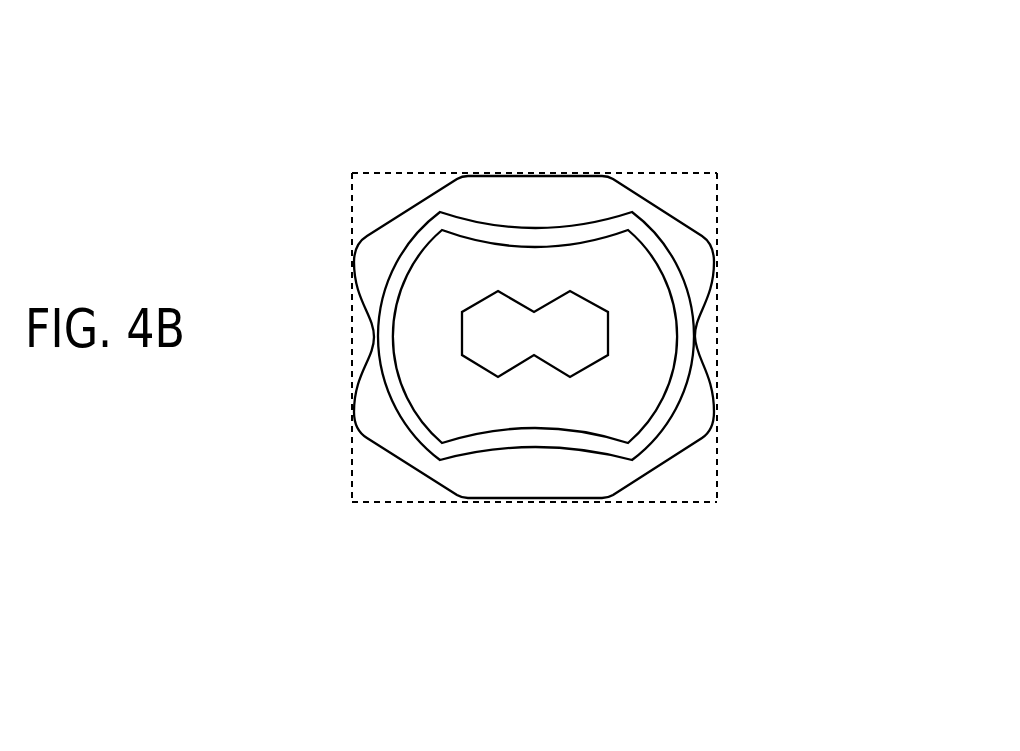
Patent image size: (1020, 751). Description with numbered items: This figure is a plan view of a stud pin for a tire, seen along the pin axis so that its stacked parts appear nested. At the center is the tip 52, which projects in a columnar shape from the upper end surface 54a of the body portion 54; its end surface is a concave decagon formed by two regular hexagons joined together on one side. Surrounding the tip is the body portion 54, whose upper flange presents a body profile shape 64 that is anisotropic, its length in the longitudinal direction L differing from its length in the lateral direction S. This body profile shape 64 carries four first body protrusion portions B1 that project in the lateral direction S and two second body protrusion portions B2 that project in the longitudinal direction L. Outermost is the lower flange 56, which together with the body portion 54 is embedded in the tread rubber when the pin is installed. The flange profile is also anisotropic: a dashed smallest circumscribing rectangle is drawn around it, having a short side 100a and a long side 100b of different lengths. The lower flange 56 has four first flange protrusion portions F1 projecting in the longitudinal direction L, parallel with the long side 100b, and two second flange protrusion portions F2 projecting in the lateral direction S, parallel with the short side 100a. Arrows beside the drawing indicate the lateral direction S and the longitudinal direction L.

The tip 52 is at (530, 352).
The body portion 54 is at (610, 506).
The upper end surface 54a is at (466, 412).
The lower flange 56 is at (706, 69).
The body profile shape 64 is at (378, 445).
The short side 100a is at (352, 357).
The long side 100b is at (381, 173).
The first flange protrusion portion F1 is at (354, 272).
The second flange protrusion portion F2 is at (562, 175).
The first body protrusion portion B1 is at (428, 200).
The second body protrusion portion B2 is at (372, 312).
The lateral direction S is at (877, 200).
The longitudinal direction L is at (665, 633).